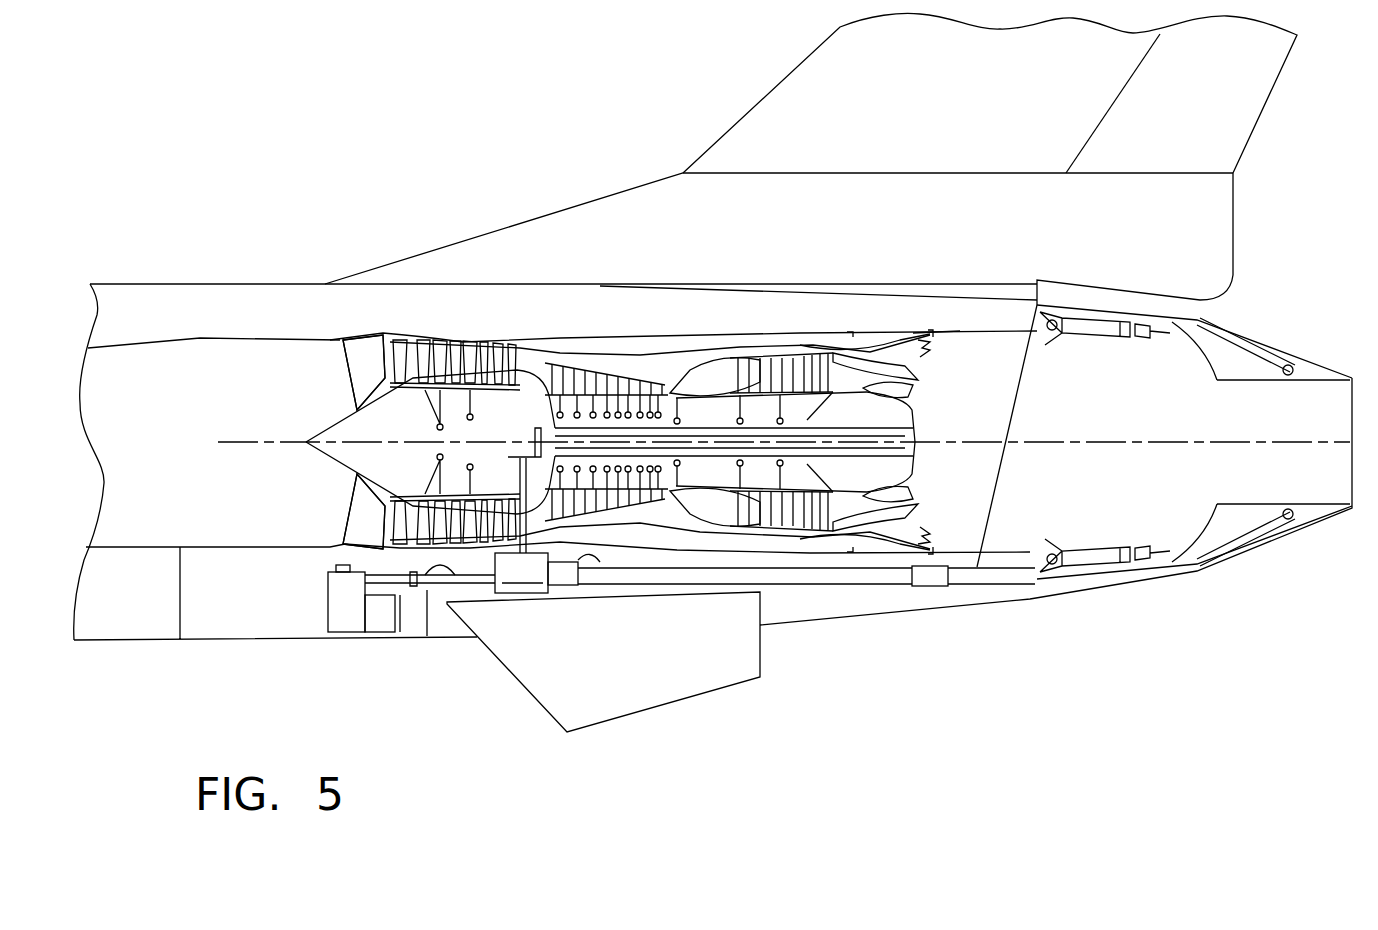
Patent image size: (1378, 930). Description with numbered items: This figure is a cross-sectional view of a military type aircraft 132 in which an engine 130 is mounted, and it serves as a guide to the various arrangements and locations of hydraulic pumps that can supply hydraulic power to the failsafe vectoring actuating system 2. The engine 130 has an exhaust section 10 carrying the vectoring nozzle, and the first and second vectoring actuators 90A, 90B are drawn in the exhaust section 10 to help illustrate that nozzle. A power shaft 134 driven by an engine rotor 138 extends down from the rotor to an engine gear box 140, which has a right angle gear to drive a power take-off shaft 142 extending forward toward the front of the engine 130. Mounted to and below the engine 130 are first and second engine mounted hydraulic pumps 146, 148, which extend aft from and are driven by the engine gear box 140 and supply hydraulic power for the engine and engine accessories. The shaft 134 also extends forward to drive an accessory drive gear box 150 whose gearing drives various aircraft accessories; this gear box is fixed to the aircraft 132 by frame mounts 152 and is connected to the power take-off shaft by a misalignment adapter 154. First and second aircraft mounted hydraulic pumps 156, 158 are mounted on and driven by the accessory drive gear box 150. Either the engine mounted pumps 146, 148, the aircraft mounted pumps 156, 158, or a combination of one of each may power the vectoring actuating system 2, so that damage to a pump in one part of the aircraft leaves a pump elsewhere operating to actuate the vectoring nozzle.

The vectoring actuating system 2 is at (933, 587).
The exhaust section 10 is at (957, 337).
The first vectoring actuator 90A is at (1100, 549).
The second vectoring actuator 90B is at (1100, 335).
The engine 130 is at (556, 334).
The aircraft 132 is at (293, 284).
The power shaft 134 is at (450, 449).
The engine rotor 138 is at (556, 430).
The engine gear box 140 is at (521, 573).
The power take-off shaft 142 is at (427, 636).
The first engine mounted hydraulic pump 146 is at (572, 588).
The second engine mounted hydraulic pump 148 is at (573, 557).
The accessory drive gear box 150 is at (340, 636).
The frame mounts 152 is at (330, 566).
The misalignment adapter 154 is at (447, 584).
The first aircraft mounted hydraulic pump 156 is at (372, 636).
The second aircraft mounted hydraulic pump 158 is at (400, 632).